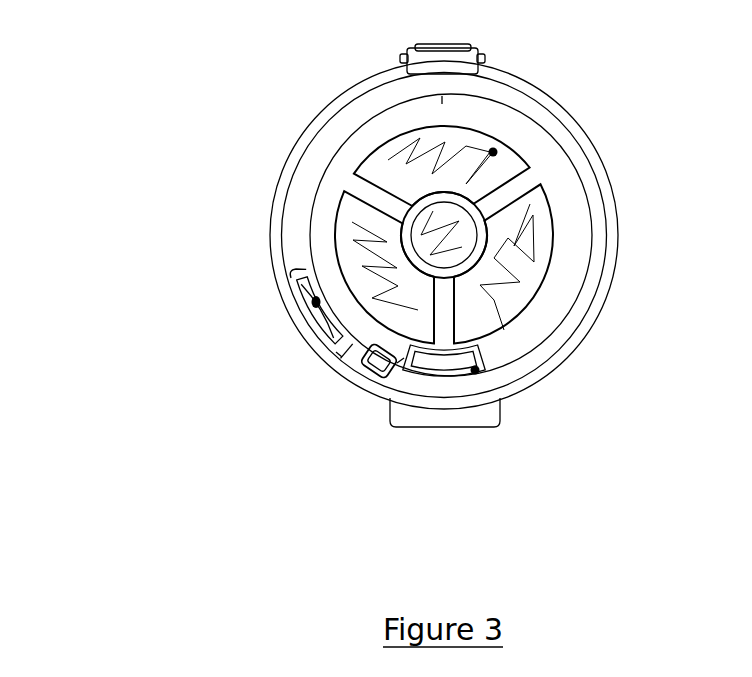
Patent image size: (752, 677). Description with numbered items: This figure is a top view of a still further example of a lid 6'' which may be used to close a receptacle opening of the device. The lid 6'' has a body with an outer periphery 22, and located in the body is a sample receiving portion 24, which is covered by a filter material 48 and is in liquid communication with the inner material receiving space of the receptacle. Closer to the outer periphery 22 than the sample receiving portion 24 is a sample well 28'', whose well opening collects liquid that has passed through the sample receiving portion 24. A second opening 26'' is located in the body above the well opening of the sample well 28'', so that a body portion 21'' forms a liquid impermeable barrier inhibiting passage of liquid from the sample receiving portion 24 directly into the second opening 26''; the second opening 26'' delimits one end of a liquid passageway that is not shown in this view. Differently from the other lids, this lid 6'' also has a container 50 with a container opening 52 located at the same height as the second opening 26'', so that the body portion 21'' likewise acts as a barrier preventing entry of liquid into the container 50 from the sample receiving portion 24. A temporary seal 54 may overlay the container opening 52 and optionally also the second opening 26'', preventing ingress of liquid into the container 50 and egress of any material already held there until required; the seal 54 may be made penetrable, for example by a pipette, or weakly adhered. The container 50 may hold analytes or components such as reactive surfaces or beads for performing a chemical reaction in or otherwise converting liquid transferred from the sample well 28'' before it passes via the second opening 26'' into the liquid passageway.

The lid 6'' is at (93, 78).
The outer periphery 22 is at (598, 264).
The sample receiving portion 24 is at (409, 187).
The filter material 48 is at (493, 152).
The temporary seal 54 is at (293, 274).
The container 50 is at (325, 308).
The container opening 52 is at (343, 352).
The second opening 26'' is at (360, 394).
The sample well 28'' is at (499, 384).
The body portion 21'' is at (422, 424).